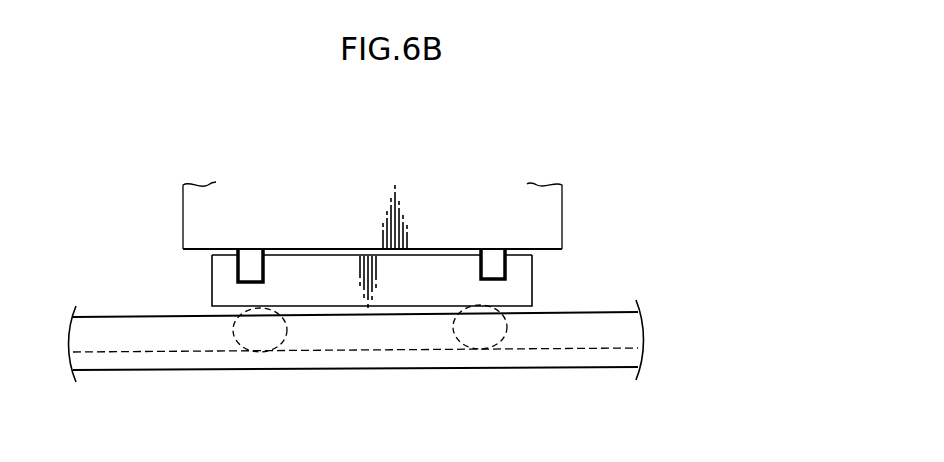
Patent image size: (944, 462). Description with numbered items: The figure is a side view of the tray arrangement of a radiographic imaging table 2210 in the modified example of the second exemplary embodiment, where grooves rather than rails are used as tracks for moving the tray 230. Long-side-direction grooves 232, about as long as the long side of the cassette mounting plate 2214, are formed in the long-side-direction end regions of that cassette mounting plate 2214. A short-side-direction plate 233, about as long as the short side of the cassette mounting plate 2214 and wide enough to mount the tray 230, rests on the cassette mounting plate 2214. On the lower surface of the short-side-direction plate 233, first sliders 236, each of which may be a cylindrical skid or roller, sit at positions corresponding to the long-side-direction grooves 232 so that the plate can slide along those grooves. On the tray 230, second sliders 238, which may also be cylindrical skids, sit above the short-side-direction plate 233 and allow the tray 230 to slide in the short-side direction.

The radiographic imaging table 2210 is at (672, 160).
The tray 230 is at (545, 220).
The short-side-direction plate 233 is at (525, 283).
The second sliders 238 is at (250, 260).
The long-side-direction grooves 232 is at (118, 330).
The cassette mounting plate 2214 is at (143, 362).
The first sliders 236 is at (260, 340).